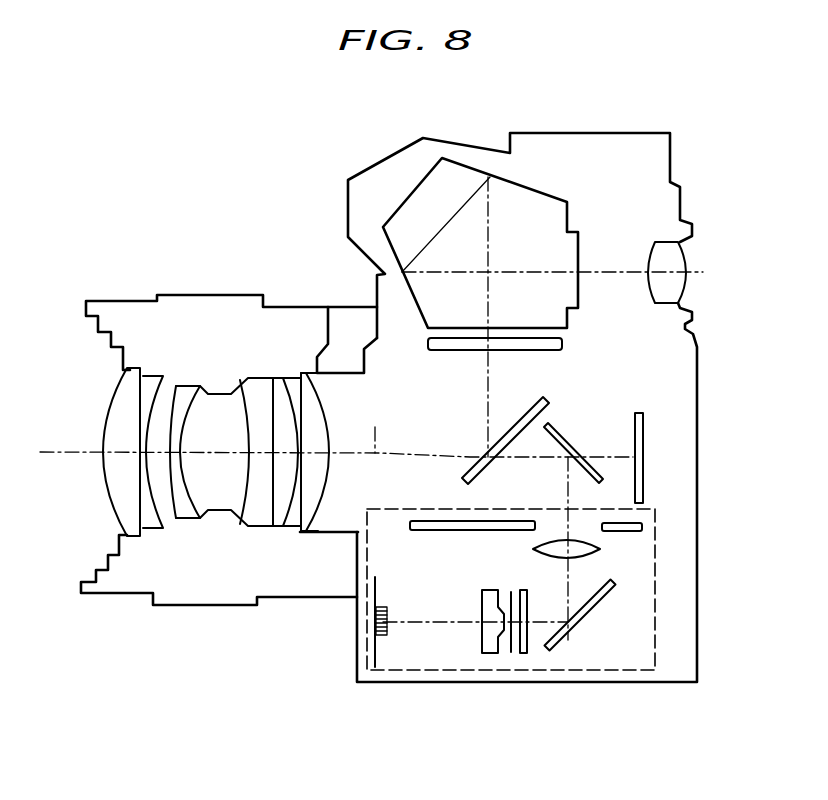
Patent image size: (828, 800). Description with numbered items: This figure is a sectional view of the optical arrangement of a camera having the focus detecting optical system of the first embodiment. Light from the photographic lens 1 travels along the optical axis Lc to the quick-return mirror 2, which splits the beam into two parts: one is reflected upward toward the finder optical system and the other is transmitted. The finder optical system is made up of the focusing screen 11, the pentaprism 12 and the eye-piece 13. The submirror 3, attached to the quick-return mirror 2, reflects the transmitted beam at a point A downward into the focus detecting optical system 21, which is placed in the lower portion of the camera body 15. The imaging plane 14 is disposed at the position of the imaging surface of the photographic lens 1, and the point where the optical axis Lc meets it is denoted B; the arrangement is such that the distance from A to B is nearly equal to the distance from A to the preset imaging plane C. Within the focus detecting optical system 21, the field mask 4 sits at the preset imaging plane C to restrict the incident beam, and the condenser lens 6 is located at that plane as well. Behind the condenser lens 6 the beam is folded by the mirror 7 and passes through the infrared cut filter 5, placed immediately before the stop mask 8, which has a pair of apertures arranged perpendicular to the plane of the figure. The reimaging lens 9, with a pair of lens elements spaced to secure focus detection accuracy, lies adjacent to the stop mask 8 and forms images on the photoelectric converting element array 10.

The photographic lens 1 is at (313, 541).
The quick-return mirror 2 is at (550, 403).
The submirror 3 is at (569, 431).
The field mask 4 is at (523, 532).
The infrared cut filter 5 is at (532, 645).
The condenser lens 6 is at (603, 549).
The mirror 7 is at (605, 588).
The stop mask 8 is at (507, 648).
The reimaging lens 9 is at (488, 655).
The photoelectric converting element array 10 is at (385, 647).
The focusing screen 11 is at (562, 343).
The pentaprism 12 is at (530, 191).
The eye-piece 13 is at (687, 252).
The imaging plane 14 is at (647, 486).
The camera body 15 is at (338, 613).
The focus detecting optical system 21 is at (613, 673).
The point A is at (572, 457).
The point B is at (632, 457).
The preset imaging plane C is at (567, 541).
The optical axis Lc is at (377, 425).